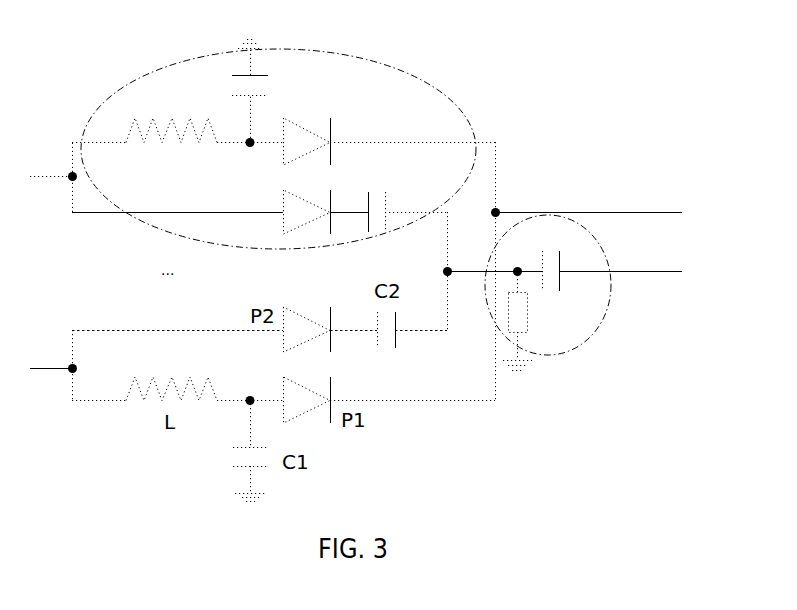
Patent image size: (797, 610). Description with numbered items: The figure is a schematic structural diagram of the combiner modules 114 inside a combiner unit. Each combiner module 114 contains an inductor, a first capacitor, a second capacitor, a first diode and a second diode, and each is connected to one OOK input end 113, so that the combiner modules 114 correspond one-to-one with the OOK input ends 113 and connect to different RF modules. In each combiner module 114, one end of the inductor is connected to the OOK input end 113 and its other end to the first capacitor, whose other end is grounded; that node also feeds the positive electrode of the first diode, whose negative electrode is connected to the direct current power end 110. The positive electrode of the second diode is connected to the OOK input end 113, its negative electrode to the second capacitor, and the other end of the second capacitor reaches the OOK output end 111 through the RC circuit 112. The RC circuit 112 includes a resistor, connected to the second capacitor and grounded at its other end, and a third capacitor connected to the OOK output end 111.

The direct current power end 110 is at (588, 200).
The OOK output end 111 is at (564, 259).
The resistance-capacitance unit (RC circuit) 112 is at (588, 342).
The OOK input end 113 is at (53, 260).
The combiner module 114 is at (410, 77).